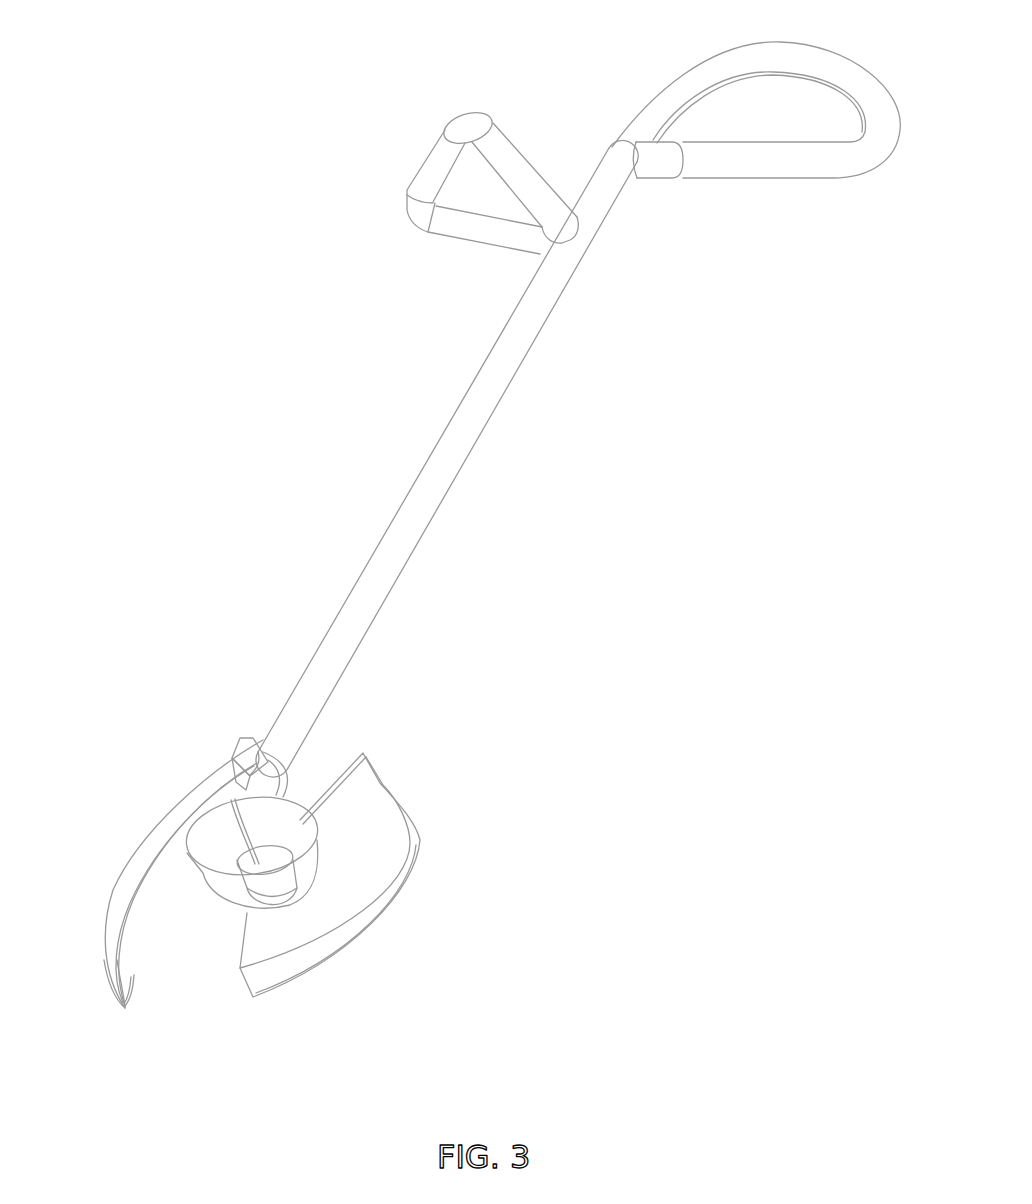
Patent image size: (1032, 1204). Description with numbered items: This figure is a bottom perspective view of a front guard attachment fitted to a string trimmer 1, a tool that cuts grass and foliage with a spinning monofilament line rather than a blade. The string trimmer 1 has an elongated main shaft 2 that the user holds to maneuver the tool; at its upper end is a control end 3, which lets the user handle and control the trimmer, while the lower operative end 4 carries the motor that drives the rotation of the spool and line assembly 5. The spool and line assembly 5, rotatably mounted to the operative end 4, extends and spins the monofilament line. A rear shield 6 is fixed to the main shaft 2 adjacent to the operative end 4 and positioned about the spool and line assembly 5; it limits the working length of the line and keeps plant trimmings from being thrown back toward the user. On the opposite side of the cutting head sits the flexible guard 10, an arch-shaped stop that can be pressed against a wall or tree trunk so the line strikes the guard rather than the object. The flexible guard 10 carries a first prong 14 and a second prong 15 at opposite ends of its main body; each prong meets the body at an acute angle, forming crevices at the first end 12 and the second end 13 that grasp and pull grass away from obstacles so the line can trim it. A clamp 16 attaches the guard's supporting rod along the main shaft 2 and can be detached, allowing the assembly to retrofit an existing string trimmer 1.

The string trimmer 1 is at (385, 62).
The main shaft 2 is at (433, 458).
The control end 3 is at (586, 181).
The operative end 4 is at (289, 689).
The spool and line assembly 5 is at (222, 904).
The rear shield 6 is at (393, 779).
The flexible guard 10 is at (160, 816).
The first end 12 is at (102, 968).
The second end 13 is at (240, 738).
The first prong 14 is at (130, 978).
The second prong 15 is at (243, 781).
The clamp 16 is at (285, 778).